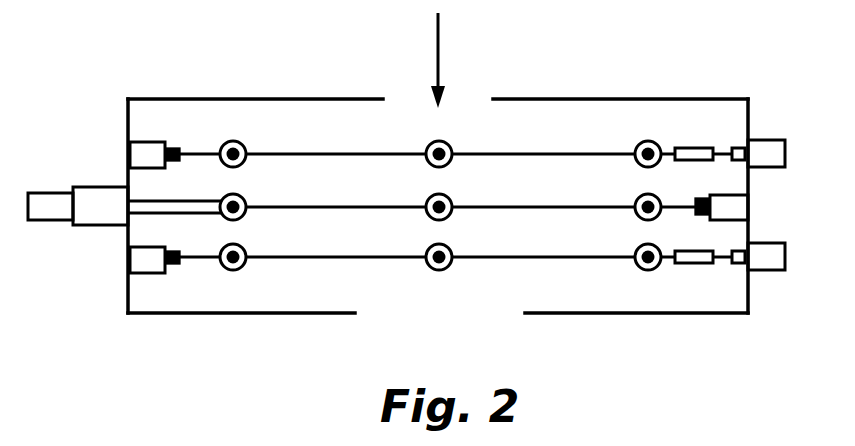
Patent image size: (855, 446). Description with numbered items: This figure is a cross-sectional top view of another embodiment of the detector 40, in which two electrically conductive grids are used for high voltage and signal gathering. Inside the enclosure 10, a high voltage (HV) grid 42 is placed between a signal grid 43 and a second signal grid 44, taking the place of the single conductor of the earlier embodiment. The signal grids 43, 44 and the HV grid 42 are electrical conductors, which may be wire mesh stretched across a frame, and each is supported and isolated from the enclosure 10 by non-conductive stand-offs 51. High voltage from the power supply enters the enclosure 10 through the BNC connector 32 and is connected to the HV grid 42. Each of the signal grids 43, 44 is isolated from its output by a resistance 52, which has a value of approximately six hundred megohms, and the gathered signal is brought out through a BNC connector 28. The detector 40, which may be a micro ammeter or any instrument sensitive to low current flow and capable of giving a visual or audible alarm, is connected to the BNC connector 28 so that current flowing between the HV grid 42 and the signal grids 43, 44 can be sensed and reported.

The enclosure 10 is at (235, 97).
The BNC connector 28 is at (765, 140).
The BNC connector 32 is at (67, 222).
The detector 40 is at (483, 42).
The high voltage (HV) grid 42 is at (505, 205).
The signal grid 43 is at (505, 152).
The signal grid 44 is at (505, 255).
The non-conductive stand-offs 51 is at (145, 140).
The resistance 52 is at (694, 210).